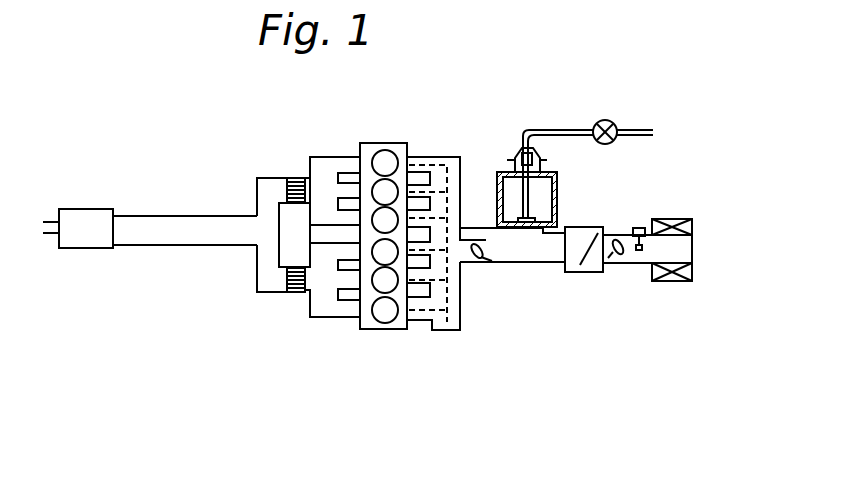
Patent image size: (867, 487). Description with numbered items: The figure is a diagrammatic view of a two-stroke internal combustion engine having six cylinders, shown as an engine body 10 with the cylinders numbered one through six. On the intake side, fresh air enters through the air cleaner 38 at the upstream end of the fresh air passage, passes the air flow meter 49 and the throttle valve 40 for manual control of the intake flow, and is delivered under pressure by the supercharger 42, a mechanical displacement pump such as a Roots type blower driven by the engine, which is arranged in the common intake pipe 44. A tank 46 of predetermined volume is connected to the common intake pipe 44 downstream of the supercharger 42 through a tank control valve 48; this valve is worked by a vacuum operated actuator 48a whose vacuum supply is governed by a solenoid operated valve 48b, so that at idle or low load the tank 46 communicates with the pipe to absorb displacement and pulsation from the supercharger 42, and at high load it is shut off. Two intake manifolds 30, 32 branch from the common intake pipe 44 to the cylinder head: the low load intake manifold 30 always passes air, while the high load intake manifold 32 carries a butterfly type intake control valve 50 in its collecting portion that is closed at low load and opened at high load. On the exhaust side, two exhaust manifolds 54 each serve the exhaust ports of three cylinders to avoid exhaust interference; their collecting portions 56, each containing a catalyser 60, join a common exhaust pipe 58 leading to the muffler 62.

The engine body 10 is at (378, 143).
The intake manifold 30 is at (473, 228).
The intake manifold 32 is at (457, 252).
The air cleaner 38 is at (672, 219).
The throttle valve 40 is at (623, 263).
The supercharger 42 is at (590, 272).
The common intake pipe 44 is at (543, 262).
The tank 46 is at (557, 176).
The tank control valve 48 is at (532, 217).
The vacuum operated actuator 48a is at (545, 150).
The solenoid operated valve 48b is at (613, 122).
The air flow meter 49 is at (639, 227).
The intake control valve 50 is at (492, 260).
The exhaust manifolds 54 is at (327, 158).
The collecting portions 56 is at (263, 178).
The common exhaust pipe 58 is at (229, 216).
The catalysers 60 is at (296, 178).
The muffler 62 is at (92, 249).